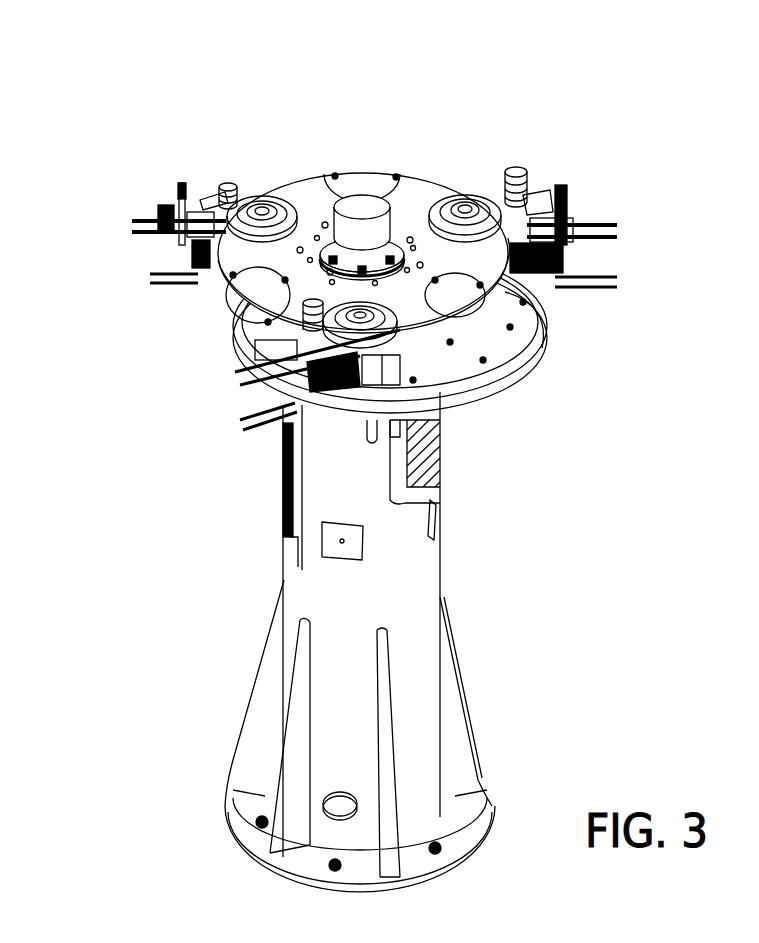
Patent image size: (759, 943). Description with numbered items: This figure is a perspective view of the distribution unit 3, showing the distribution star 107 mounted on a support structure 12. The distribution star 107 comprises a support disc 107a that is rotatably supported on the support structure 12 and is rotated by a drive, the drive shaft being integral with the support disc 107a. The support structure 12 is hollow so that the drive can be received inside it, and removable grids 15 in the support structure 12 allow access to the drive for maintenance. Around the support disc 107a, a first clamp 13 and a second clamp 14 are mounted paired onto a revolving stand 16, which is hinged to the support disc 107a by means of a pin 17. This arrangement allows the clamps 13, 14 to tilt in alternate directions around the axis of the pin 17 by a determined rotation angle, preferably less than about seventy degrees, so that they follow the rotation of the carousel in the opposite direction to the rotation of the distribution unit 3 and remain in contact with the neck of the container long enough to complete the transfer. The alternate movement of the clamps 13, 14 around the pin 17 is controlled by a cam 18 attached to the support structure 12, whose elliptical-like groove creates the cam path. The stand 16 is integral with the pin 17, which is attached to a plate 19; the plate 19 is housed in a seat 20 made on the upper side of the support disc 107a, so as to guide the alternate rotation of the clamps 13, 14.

The distribution unit 3 is at (121, 150).
The support structure 12 is at (420, 577).
The first clamp 13 is at (166, 182).
The second clamp 14 is at (148, 305).
The removable grids 15 is at (440, 445).
The revolving stand 16 is at (420, 378).
The pin 17 is at (317, 194).
The cam 18 is at (553, 330).
The plate 19 is at (302, 188).
The seat 20 is at (368, 187).
The distribution star 107 is at (487, 368).
The support disc 107a is at (423, 193).